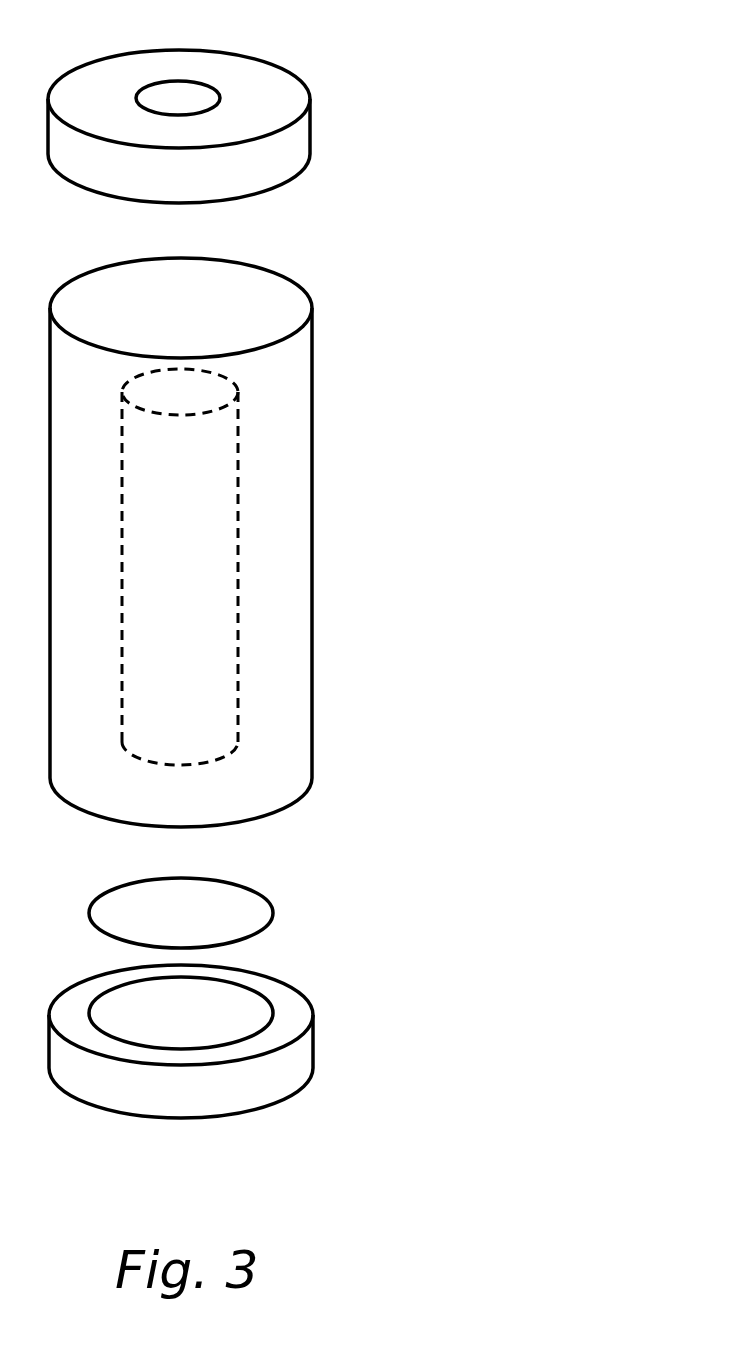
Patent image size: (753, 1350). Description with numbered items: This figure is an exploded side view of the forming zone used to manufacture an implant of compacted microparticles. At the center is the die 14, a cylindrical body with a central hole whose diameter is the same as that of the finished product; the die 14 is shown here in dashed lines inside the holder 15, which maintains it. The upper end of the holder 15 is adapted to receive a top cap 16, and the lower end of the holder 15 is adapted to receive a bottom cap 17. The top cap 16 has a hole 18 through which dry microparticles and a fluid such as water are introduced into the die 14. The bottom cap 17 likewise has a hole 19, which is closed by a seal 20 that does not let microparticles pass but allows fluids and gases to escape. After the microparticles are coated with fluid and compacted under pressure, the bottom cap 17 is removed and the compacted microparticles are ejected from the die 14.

The die 14 is at (238, 525).
The holder 15 is at (312, 392).
The top cap 16 is at (300, 143).
The bottom cap 17 is at (313, 1043).
The hole 18 is at (194, 106).
The hole 19 is at (245, 1024).
The seal 20 is at (250, 901).